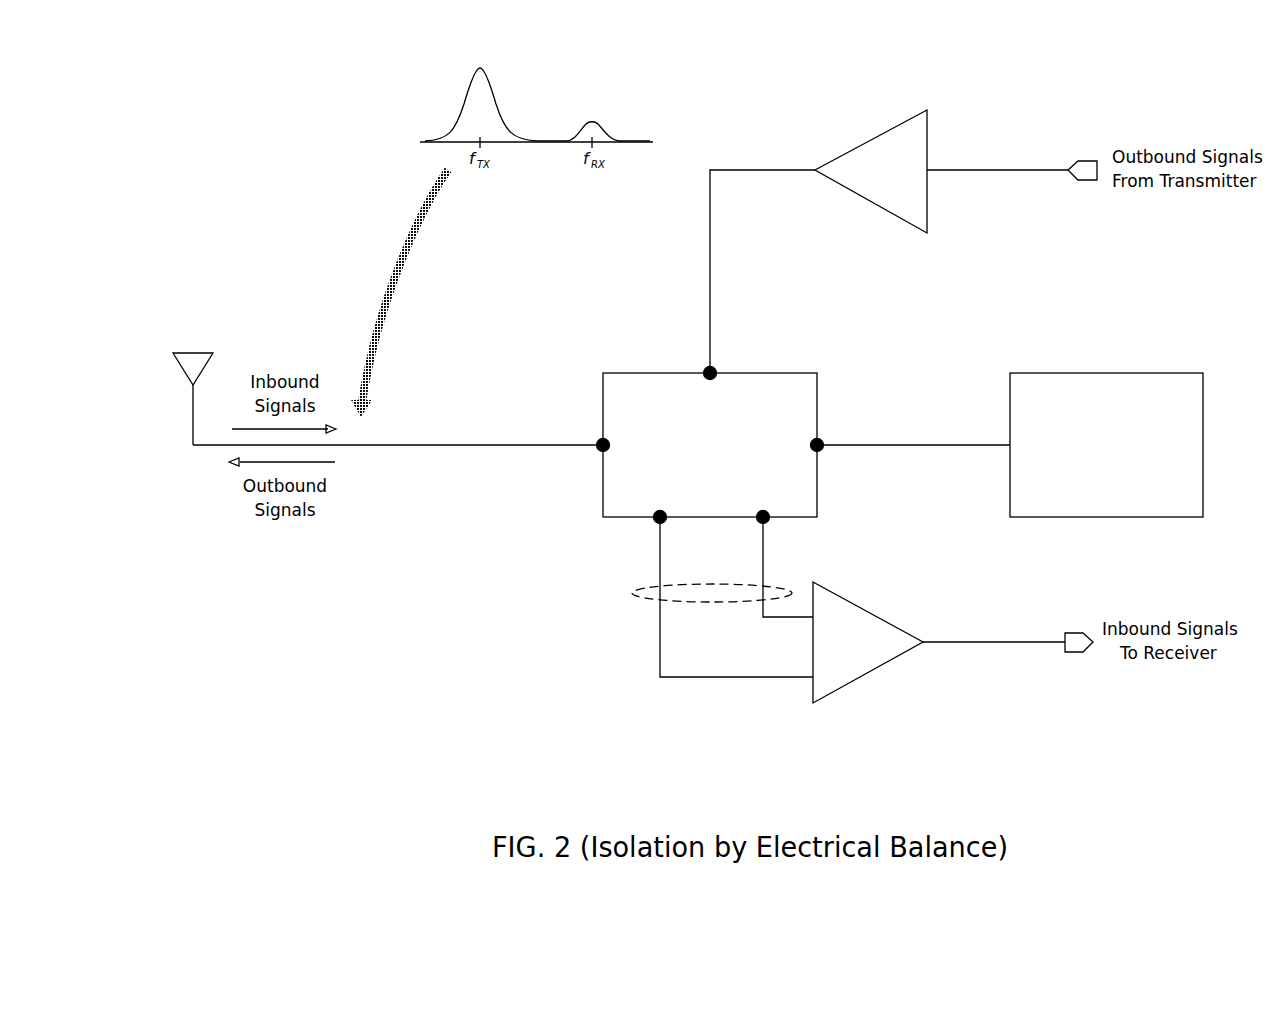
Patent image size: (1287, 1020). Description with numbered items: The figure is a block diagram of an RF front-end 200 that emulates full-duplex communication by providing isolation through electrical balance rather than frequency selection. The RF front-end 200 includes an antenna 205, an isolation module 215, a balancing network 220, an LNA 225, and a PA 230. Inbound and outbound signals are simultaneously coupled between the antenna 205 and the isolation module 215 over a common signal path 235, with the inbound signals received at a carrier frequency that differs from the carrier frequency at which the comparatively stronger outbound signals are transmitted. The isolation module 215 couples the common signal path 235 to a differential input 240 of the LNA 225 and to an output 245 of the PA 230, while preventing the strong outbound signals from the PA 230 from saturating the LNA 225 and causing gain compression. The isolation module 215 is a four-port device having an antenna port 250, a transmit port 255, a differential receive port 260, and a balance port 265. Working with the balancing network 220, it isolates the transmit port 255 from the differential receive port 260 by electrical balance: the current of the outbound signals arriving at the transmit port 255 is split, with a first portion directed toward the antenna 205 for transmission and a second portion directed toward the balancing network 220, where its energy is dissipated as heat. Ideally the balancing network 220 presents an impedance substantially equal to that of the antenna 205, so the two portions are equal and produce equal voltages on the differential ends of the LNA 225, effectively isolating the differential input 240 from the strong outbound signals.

The RF front-end 200 is at (318, 738).
The antenna 205 is at (205, 370).
The isolation module 215 is at (710, 445).
The balancing network 220 is at (1106, 445).
The LNA 225 is at (865, 608).
The PA 230 is at (873, 133).
The common signal path 235 is at (453, 443).
The differential input 240 is at (632, 593).
The output 245 is at (709, 222).
The antenna port 250 is at (598, 443).
The transmit port 255 is at (714, 370).
The differential receive port 260 is at (758, 522).
The balance port 265 is at (822, 443).